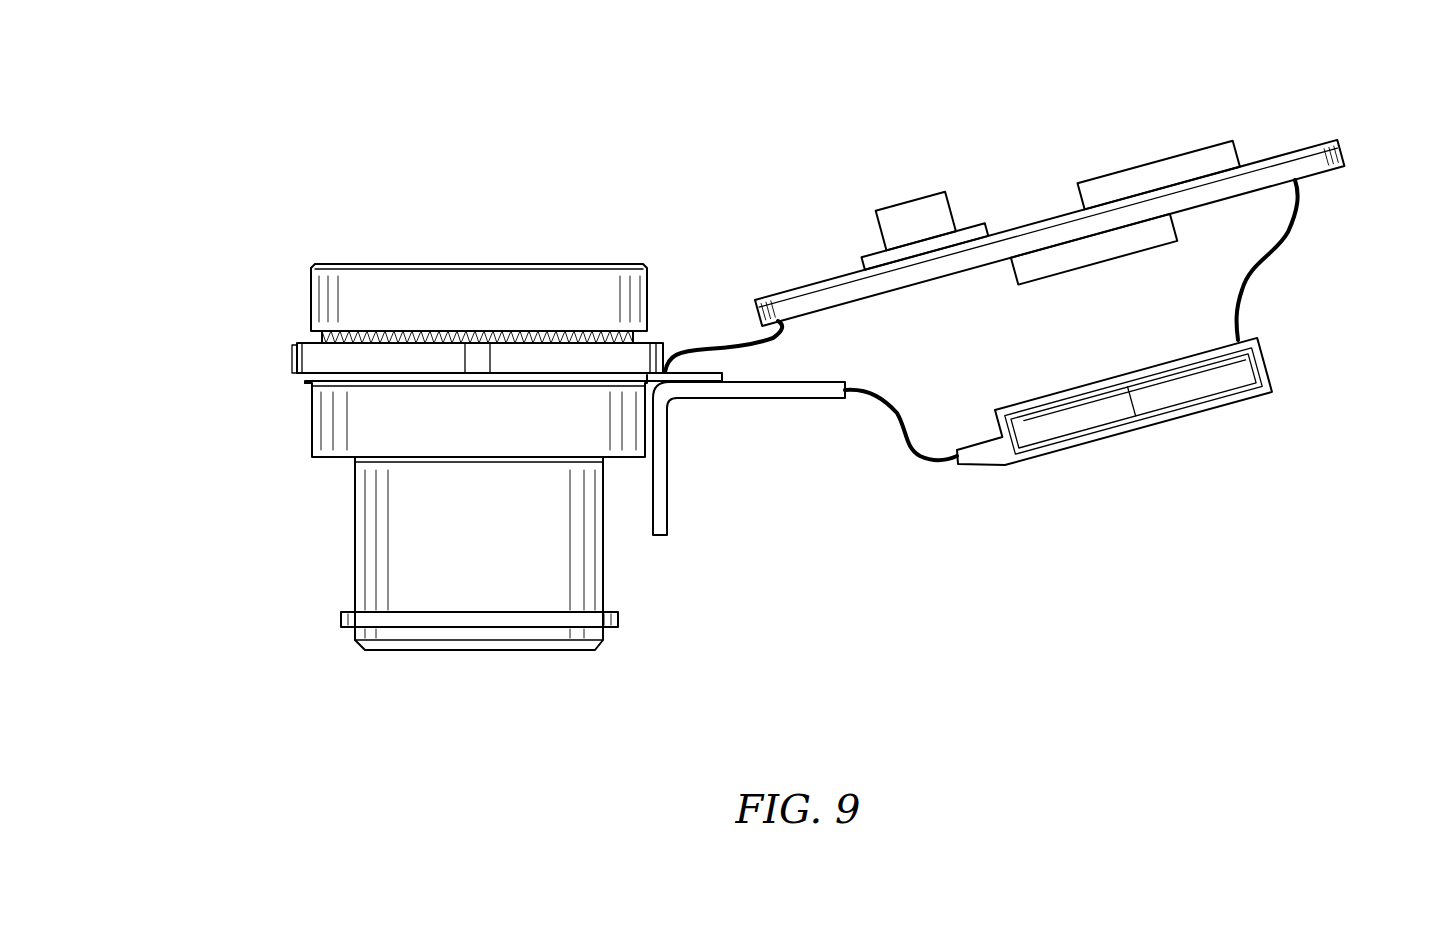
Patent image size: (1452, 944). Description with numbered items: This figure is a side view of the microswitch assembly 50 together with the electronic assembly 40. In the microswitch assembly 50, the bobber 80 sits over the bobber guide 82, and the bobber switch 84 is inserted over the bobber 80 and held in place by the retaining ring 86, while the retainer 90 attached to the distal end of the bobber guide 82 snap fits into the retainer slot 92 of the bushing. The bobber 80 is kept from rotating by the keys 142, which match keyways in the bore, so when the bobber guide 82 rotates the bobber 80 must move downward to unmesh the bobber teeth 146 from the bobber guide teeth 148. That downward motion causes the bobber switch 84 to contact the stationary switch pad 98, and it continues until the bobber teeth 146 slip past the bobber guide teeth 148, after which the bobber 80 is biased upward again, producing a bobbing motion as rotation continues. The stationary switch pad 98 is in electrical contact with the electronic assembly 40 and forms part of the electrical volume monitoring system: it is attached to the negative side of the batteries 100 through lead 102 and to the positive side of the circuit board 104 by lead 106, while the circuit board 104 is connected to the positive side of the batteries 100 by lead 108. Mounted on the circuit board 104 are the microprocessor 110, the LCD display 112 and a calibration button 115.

The electronic assembly 40 is at (1292, 282).
The microswitch assembly 50 is at (362, 243).
The bobber 80 is at (340, 448).
The bobber guide 82 is at (473, 258).
The bobber switch 84 is at (690, 379).
The retaining ring 86 is at (333, 372).
The retainer 90 is at (340, 616).
The retainer slot 92 is at (352, 278).
The stationary switch pad 98 is at (810, 399).
The batteries 100 is at (1178, 386).
The lead 102 is at (918, 462).
The circuit board 104 is at (1260, 171).
The lead 106 is at (1293, 230).
The lead 108 is at (685, 345).
The microprocessor 110 is at (1067, 277).
The LCD display 112 is at (1162, 178).
The calibration button 115 is at (913, 217).
The keys 142 is at (295, 358).
The bobber teeth 146 is at (320, 338).
The bobber guide teeth 148 is at (322, 330).